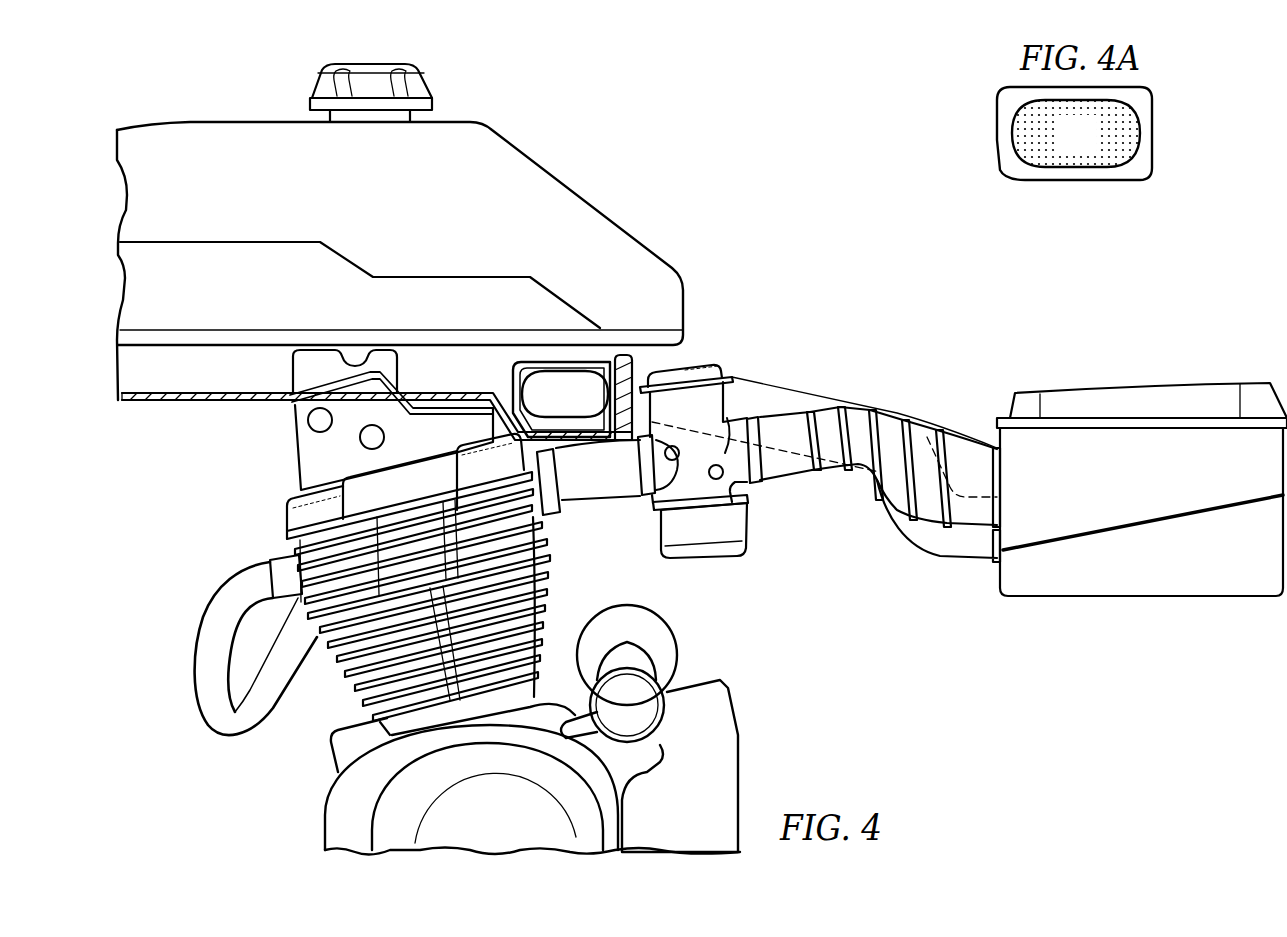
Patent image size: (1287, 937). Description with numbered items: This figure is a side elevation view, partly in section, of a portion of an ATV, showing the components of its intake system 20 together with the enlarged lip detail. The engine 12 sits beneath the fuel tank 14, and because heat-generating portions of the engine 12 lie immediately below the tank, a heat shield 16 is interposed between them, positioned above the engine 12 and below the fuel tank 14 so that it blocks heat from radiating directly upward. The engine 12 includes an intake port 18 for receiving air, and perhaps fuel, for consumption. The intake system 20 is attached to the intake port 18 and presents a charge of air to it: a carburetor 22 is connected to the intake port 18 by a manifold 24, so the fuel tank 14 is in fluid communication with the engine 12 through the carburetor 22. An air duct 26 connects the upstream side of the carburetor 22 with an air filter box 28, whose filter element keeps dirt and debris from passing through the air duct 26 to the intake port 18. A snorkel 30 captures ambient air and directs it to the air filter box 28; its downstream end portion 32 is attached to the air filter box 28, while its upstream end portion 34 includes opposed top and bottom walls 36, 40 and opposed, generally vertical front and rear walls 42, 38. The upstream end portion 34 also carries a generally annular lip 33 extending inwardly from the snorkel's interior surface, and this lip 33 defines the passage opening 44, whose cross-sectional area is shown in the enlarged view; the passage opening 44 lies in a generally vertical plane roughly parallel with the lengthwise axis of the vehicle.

In FIG. 4, the engine 12 is at (292, 459).
In FIG. 4, the fuel tank 14 is at (553, 178).
In FIG. 4, the heat shield 16 is at (153, 404).
In FIG. 4, the intake port 18 is at (556, 467).
In FIG. 4, the intake system 20 is at (966, 437).
In FIG. 4, the carburetor 22 is at (712, 362).
In FIG. 4, the manifold 24 is at (592, 506).
In FIG. 4, the air duct 26 is at (790, 478).
In FIG. 4, the air filter box 28 is at (1158, 383).
In FIG. 4, the snorkel 30 is at (812, 386).
In FIG. 4, the downstream end portion 32 is at (972, 557).
In FIG. 4, the lip 33 is at (553, 366).
In FIG. 4A, the lip 33 is at (1143, 165).
In FIG. 4, the upstream end portion 34 is at (510, 378).
In FIG. 4, the top wall 36 is at (525, 368).
In FIG. 4, the rear wall 38 is at (640, 406).
In FIG. 4, the bottom wall 40 is at (598, 444).
In FIG. 4, the front wall 42 is at (497, 415).
In FIG. 4, the passage opening 44 is at (573, 384).
In FIG. 4A, the passage opening 44 is at (1046, 156).